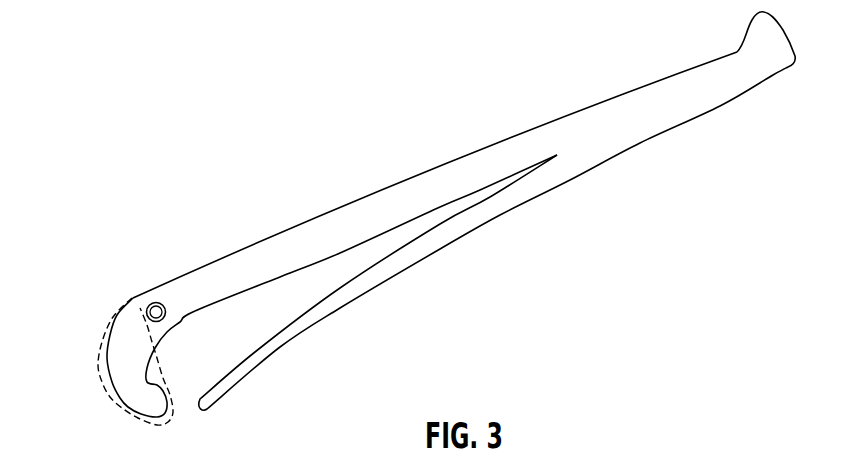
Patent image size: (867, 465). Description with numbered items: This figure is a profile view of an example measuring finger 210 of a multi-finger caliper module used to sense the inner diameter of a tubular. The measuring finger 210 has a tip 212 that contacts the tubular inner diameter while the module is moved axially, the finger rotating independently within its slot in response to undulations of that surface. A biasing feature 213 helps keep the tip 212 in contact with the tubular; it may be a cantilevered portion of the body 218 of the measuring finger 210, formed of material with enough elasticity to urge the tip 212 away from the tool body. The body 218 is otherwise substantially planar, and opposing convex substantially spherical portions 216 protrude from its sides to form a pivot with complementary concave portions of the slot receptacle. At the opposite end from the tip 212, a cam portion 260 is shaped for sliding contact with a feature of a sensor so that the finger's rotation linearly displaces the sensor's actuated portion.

The measuring finger 210 is at (211, 129).
The tip 212 is at (748, 32).
The biasing feature 213 is at (255, 365).
The substantially spherical portions 216 is at (155, 303).
The body 218 is at (325, 215).
The cam portion 260 is at (116, 299).